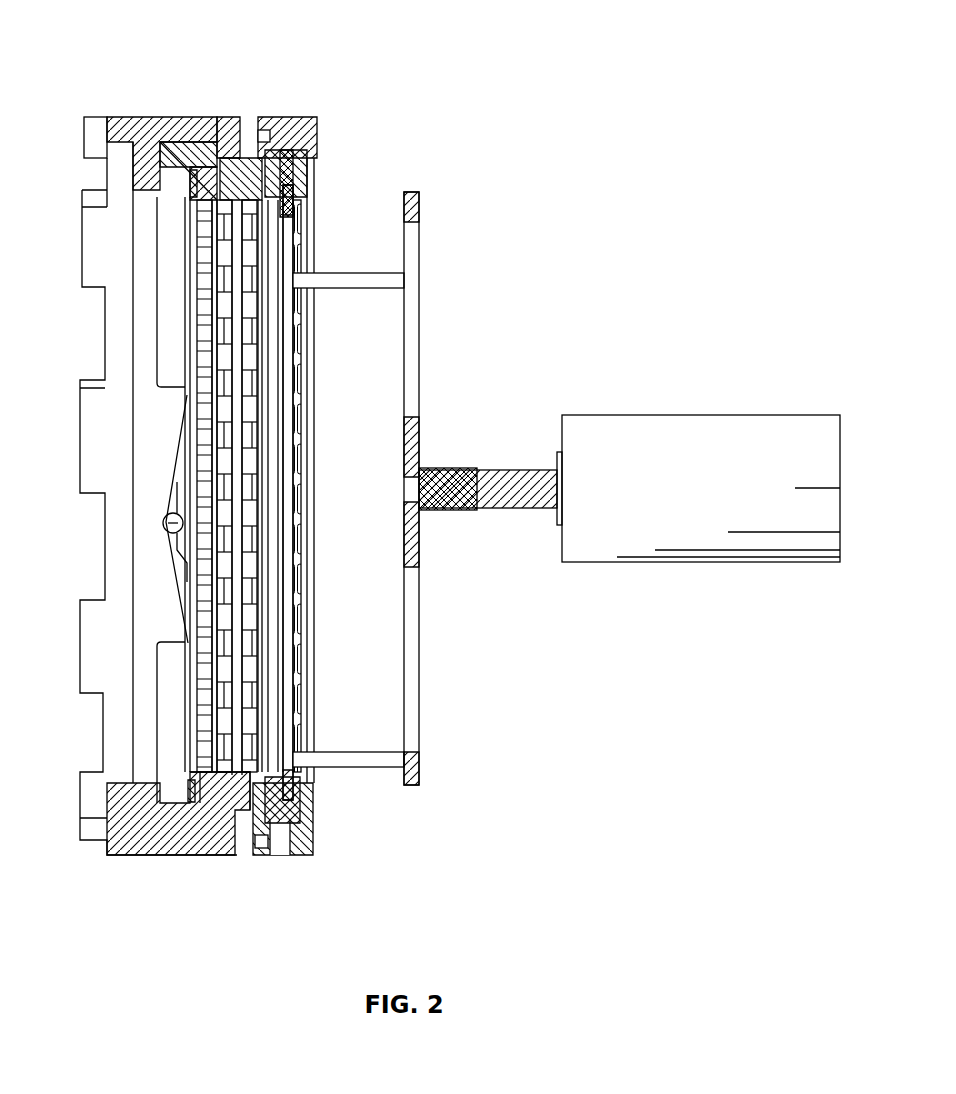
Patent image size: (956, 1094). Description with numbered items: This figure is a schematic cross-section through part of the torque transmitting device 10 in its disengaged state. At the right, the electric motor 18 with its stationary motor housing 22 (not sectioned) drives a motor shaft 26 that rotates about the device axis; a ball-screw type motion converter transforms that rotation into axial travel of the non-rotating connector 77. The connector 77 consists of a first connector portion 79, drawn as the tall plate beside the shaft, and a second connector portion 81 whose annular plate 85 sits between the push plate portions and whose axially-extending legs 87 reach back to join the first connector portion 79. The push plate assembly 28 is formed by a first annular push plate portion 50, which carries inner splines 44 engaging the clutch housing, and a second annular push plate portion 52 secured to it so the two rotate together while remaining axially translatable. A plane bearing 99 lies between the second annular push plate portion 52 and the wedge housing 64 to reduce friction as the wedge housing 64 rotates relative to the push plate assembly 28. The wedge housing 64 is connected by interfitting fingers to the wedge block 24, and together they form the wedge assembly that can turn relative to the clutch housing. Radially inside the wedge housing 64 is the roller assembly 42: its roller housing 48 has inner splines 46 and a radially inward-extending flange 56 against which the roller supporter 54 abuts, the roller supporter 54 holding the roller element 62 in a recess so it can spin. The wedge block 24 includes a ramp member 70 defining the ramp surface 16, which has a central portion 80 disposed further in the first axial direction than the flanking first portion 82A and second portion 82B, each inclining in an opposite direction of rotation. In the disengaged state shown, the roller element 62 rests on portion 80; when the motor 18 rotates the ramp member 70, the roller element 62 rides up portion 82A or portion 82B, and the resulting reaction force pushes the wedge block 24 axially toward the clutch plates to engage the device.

The torque transmitting device 10 is at (460, 122).
The ramp surface 16 is at (183, 485).
The electric motor 18 is at (648, 380).
The motor housing 22 is at (625, 413).
The wedge block 24 is at (125, 117).
The motor shaft 26 is at (547, 470).
The push plate assembly 28 is at (318, 125).
The roller assembly 42 is at (160, 140).
The inner splines 44 is at (217, 817).
The inner splines 46 is at (197, 755).
The roller housing 48 is at (195, 148).
The first annular push plate portion 50 is at (270, 117).
The second annular push plate portion 52 is at (283, 819).
The roller supporter 54 is at (193, 692).
The radially inward-extending flange 56 is at (200, 197).
The roller element 62 is at (163, 526).
The wedge housing 64 is at (231, 140).
The ramp member 70 is at (160, 415).
The connector 77 is at (427, 470).
The first connector portion 79 is at (420, 203).
The portion of ramp surface 80 is at (185, 522).
The second connector portion 81 is at (313, 160).
The first portion of ramp surface 82A is at (183, 418).
The second portion of ramp surface 82B is at (183, 585).
The annular plate 85 is at (310, 192).
The legs 87 is at (358, 272).
The plane bearing 99 is at (240, 664).